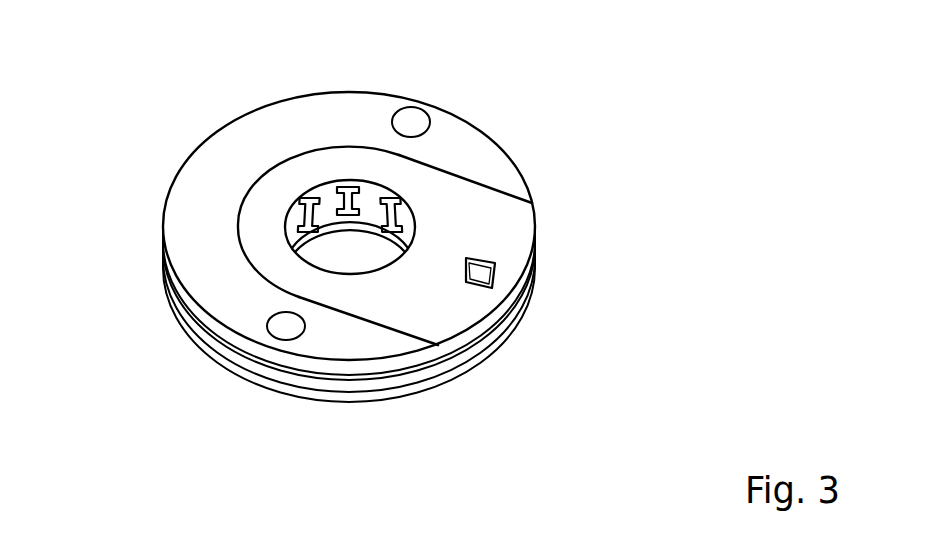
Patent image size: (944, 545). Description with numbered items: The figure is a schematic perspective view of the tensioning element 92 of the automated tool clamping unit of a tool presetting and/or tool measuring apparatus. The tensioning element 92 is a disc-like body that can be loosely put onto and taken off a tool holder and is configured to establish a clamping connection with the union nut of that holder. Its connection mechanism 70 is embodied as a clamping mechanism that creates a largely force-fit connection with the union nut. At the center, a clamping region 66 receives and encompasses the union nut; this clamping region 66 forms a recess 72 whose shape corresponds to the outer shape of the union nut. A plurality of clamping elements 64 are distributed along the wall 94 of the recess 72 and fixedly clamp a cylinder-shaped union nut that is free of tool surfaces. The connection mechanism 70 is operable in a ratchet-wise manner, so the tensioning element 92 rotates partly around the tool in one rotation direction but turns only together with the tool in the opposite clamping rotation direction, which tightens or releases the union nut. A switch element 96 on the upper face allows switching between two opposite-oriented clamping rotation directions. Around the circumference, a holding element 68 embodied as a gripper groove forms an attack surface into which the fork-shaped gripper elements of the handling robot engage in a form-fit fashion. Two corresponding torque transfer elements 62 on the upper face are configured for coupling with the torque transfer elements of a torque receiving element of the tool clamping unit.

The corresponding torque transfer elements 62 is at (410, 121).
The clamping elements 64 is at (348, 185).
The clamping region 66 is at (331, 255).
The holding element 68 is at (335, 383).
The connection mechanism 70 is at (327, 203).
The recess 72 is at (375, 251).
The tensioning element 92 is at (513, 150).
The wall 94 is at (372, 202).
The switch element 96 is at (492, 270).